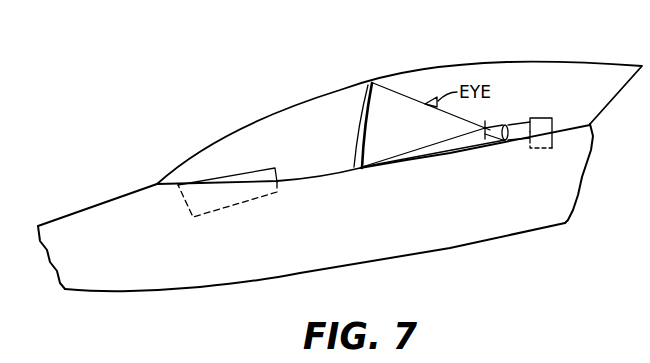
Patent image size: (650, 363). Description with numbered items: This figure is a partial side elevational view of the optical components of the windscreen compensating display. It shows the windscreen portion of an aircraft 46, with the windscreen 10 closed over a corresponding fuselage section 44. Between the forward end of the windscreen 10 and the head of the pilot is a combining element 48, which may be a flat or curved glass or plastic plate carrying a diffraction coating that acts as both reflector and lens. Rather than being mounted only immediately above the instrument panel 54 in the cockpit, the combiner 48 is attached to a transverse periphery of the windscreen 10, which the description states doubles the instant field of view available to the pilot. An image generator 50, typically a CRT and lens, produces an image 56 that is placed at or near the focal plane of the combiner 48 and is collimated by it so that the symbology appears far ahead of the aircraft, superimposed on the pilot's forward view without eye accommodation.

The windscreen 10 is at (248, 119).
The fuselage section 44 is at (127, 203).
The aircraft 46 is at (137, 292).
The combining element 48 is at (382, 95).
The image generator 50 is at (548, 111).
The instrument panel 54 is at (235, 207).
The image 56 is at (483, 140).